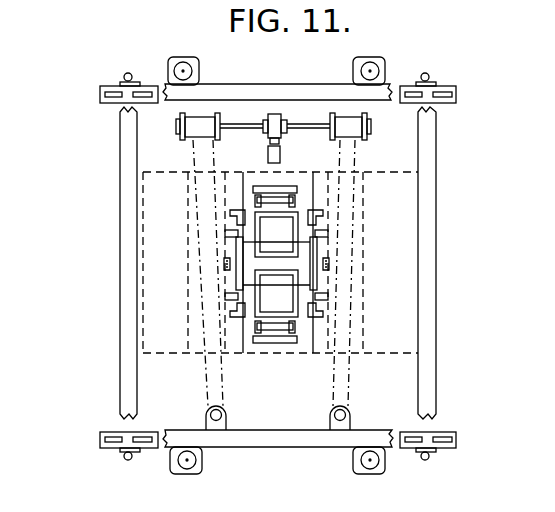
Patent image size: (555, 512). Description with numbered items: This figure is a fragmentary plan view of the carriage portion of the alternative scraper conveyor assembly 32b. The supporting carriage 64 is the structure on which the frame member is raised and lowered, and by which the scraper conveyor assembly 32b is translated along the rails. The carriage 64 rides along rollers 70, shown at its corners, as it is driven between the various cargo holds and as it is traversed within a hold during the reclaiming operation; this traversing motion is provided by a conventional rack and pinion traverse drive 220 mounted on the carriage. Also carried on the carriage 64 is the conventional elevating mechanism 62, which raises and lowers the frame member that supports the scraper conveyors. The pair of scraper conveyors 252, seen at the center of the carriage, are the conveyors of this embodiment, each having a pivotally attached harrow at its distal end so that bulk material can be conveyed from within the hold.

The rollers 70 is at (129, 76).
The rack and pinion traverse drive 220 is at (352, 72).
The elevating mechanism 62 is at (285, 135).
The scraper conveyor 252 is at (246, 215).
The scraper conveyor assembly 32b is at (112, 272).
The supporting carriage 64 is at (437, 258).